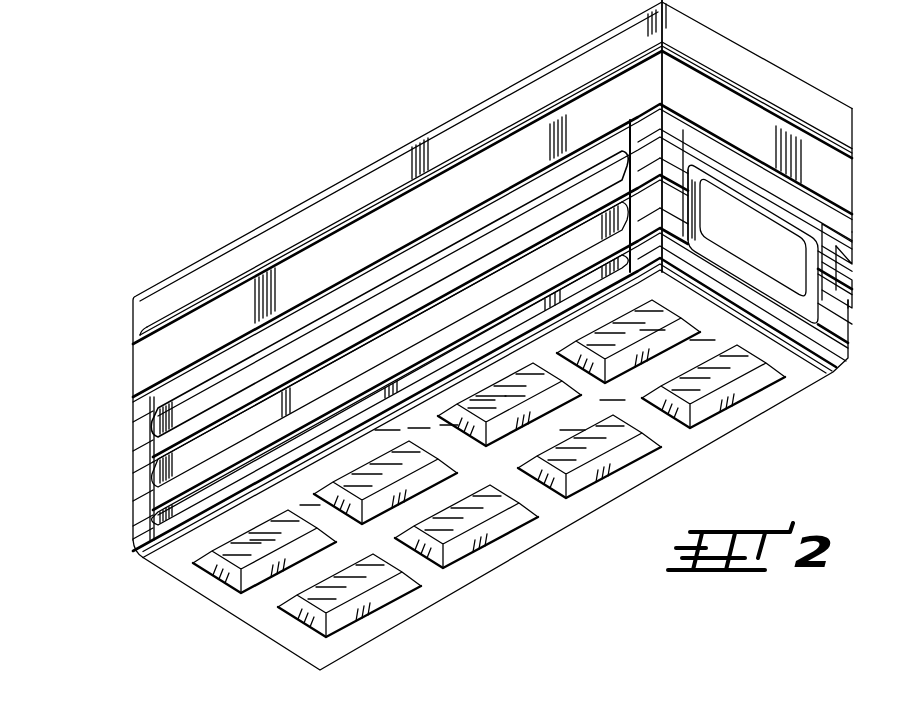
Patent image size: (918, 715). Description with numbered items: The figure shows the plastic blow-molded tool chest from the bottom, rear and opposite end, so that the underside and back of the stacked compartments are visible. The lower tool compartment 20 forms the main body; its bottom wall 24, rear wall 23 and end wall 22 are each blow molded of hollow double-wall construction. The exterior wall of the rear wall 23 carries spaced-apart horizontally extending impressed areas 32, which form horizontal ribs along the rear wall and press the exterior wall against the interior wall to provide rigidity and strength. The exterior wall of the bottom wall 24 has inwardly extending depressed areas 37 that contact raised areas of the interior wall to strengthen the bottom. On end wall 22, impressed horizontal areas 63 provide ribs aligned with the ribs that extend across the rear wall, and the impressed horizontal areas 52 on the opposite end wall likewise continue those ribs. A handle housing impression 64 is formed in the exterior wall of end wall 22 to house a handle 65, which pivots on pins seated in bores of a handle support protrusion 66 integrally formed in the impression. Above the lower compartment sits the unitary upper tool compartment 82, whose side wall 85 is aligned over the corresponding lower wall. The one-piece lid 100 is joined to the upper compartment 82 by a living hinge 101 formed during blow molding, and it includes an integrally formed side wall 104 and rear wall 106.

The lower tool compartment 20 is at (88, 500).
The end wall 22 is at (823, 210).
The rear wall 23 is at (350, 292).
The bottom wall 24 is at (652, 424).
The impressed areas 32 is at (421, 383).
The depressed areas 37 is at (571, 448).
The impressed horizontal areas 52 is at (139, 437).
The impressed horizontal areas 63 is at (845, 297).
The handle housing impression 64 is at (830, 248).
The handle 65 is at (738, 250).
The handle support protrusion 66 is at (796, 231).
The upper tool compartment 82 is at (120, 368).
The side wall 85 is at (721, 125).
The lid 100 is at (170, 266).
The living hinge 101 is at (294, 254).
The side wall 104 is at (740, 81).
The rear wall 106 is at (347, 214).